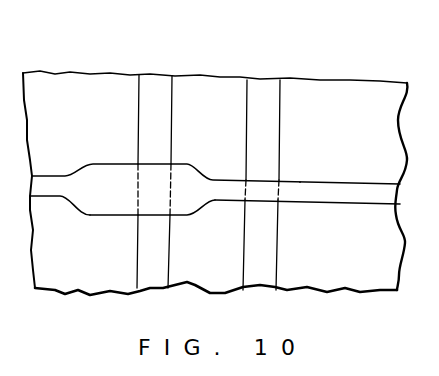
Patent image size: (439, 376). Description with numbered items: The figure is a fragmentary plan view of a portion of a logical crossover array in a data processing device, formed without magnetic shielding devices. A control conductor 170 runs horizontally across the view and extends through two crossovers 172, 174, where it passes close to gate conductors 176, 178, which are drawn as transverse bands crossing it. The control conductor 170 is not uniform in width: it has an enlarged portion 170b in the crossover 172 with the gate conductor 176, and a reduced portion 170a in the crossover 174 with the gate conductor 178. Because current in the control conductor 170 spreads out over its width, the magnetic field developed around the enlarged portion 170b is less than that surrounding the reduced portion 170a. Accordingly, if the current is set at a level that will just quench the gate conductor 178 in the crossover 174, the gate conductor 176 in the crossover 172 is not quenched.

The control conductor 170 is at (47, 183).
The reduced portion 170a is at (261, 195).
The enlarged portion 170b is at (107, 202).
The crossover 172 is at (180, 157).
The crossover 174 is at (298, 175).
The gate conductor 176 is at (143, 93).
The gate conductor 178 is at (272, 93).